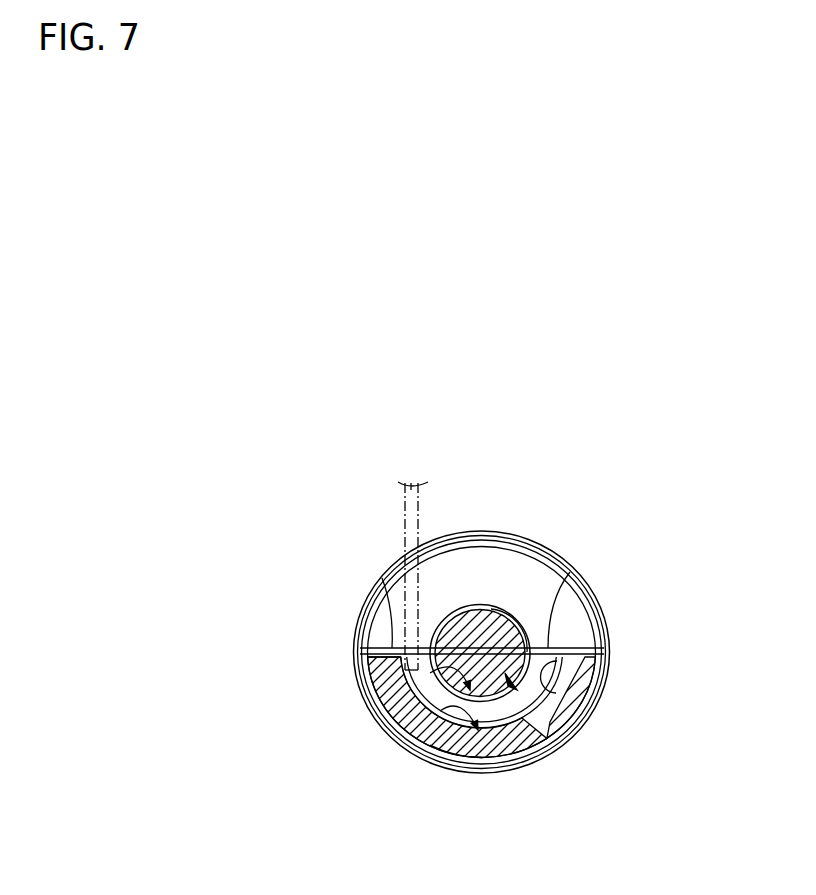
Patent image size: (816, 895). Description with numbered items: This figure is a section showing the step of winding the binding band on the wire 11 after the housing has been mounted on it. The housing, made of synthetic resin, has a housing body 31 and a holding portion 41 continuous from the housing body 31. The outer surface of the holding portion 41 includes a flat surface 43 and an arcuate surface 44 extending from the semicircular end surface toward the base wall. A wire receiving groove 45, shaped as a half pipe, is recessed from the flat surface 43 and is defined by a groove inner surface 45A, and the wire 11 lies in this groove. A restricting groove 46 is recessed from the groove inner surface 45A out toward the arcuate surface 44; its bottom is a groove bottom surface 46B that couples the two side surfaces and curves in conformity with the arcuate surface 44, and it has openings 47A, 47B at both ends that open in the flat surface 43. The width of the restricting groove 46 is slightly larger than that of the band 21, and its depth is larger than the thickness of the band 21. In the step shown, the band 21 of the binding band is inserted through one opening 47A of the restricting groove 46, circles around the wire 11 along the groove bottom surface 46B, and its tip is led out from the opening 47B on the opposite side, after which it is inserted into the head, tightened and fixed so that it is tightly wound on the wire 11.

The wire 11 is at (495, 670).
The band 21 is at (405, 537).
The housing body 31 is at (579, 625).
The holding portion 41 is at (550, 720).
The flat surface 43 is at (392, 647).
The arcuate surface 44 is at (352, 693).
The wire receiving groove 45 is at (490, 607).
The groove inner surface 45A is at (390, 694).
The restricting groove 46 is at (548, 663).
The groove bottom surface 46B is at (422, 740).
The opening 47A is at (382, 578).
The opening 47B is at (570, 572).